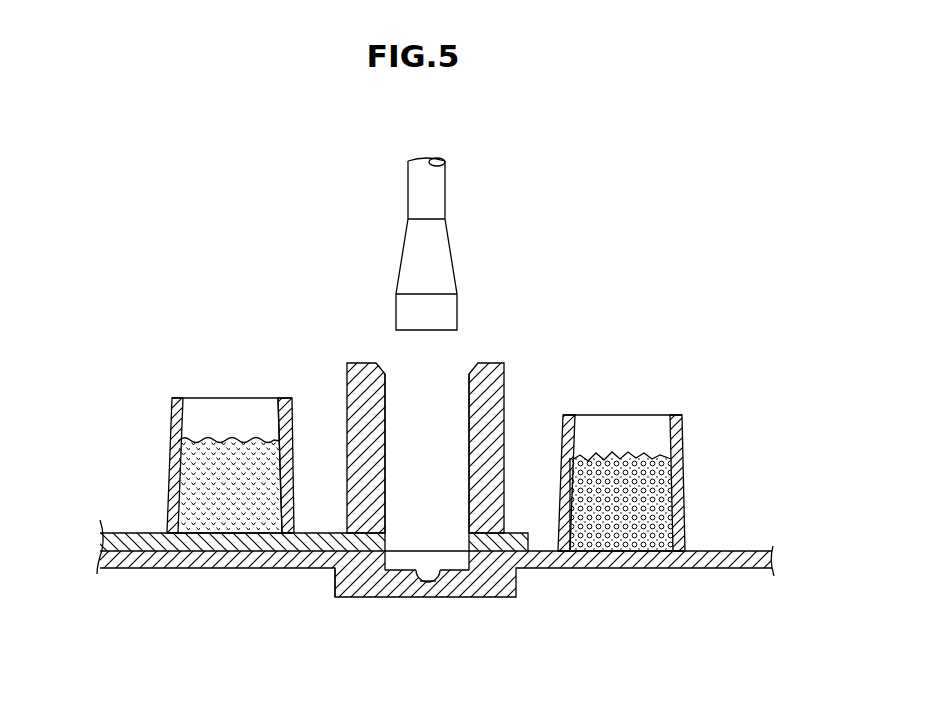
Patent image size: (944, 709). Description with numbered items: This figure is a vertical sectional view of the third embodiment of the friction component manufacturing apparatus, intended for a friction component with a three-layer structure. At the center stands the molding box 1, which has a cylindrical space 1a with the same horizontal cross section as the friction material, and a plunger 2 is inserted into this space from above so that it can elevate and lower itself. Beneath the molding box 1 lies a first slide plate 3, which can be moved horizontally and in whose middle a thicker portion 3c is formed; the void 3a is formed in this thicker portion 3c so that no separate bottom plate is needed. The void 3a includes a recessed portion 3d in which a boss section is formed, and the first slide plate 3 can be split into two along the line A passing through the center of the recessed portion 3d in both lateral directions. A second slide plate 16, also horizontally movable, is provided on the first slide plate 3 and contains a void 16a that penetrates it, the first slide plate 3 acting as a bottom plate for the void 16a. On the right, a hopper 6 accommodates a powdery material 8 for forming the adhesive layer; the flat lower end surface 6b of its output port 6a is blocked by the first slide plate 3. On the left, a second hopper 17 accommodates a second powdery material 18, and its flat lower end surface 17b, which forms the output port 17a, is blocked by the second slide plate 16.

The molding box 1 is at (355, 362).
The cylindrical space 1a is at (448, 393).
The plunger 2 is at (438, 247).
The first slide plate 3 is at (217, 558).
The void 3a is at (448, 559).
The thicker portion 3c is at (337, 588).
The recessed portion 3d is at (412, 578).
The line A is at (423, 582).
The hopper 6 is at (683, 423).
The output port 6a is at (572, 505).
The lower end surface 6b is at (710, 560).
The powdery material 8 is at (608, 453).
The second slide plate 16 is at (187, 543).
The void 16a is at (403, 537).
The second hopper 17 is at (173, 403).
The output port 17a is at (277, 520).
The lower end surface 17b is at (130, 533).
The second powdery material 18 is at (213, 452).